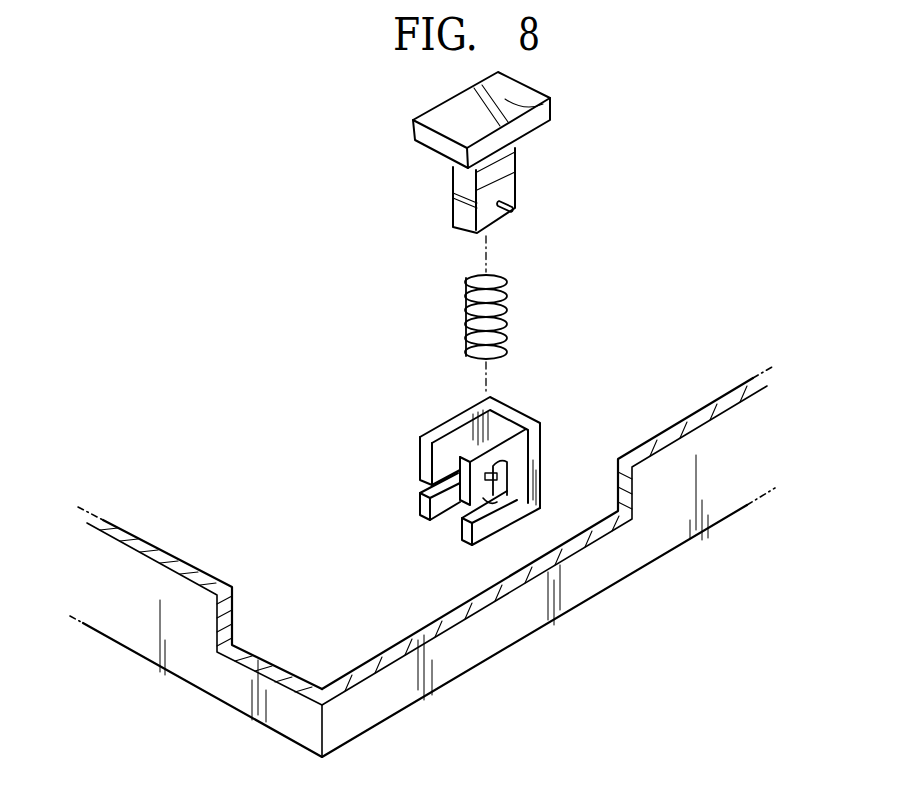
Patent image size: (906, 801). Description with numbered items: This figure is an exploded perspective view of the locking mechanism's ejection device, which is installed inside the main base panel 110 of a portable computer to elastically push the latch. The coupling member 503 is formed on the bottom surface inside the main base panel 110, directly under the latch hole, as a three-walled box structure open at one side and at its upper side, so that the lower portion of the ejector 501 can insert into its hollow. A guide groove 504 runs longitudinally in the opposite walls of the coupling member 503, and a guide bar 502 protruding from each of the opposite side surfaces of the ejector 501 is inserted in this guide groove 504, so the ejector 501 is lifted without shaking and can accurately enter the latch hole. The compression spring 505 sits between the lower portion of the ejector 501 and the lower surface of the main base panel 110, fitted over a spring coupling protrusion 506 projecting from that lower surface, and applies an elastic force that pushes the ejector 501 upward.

The main base panel 110 is at (723, 492).
The ejector 501 is at (548, 98).
The guide bar 502 is at (514, 209).
The coupling member 503 is at (535, 465).
The guide groove 504 is at (503, 475).
The compression spring 505 is at (503, 318).
The spring coupling protrusion 506 is at (487, 490).